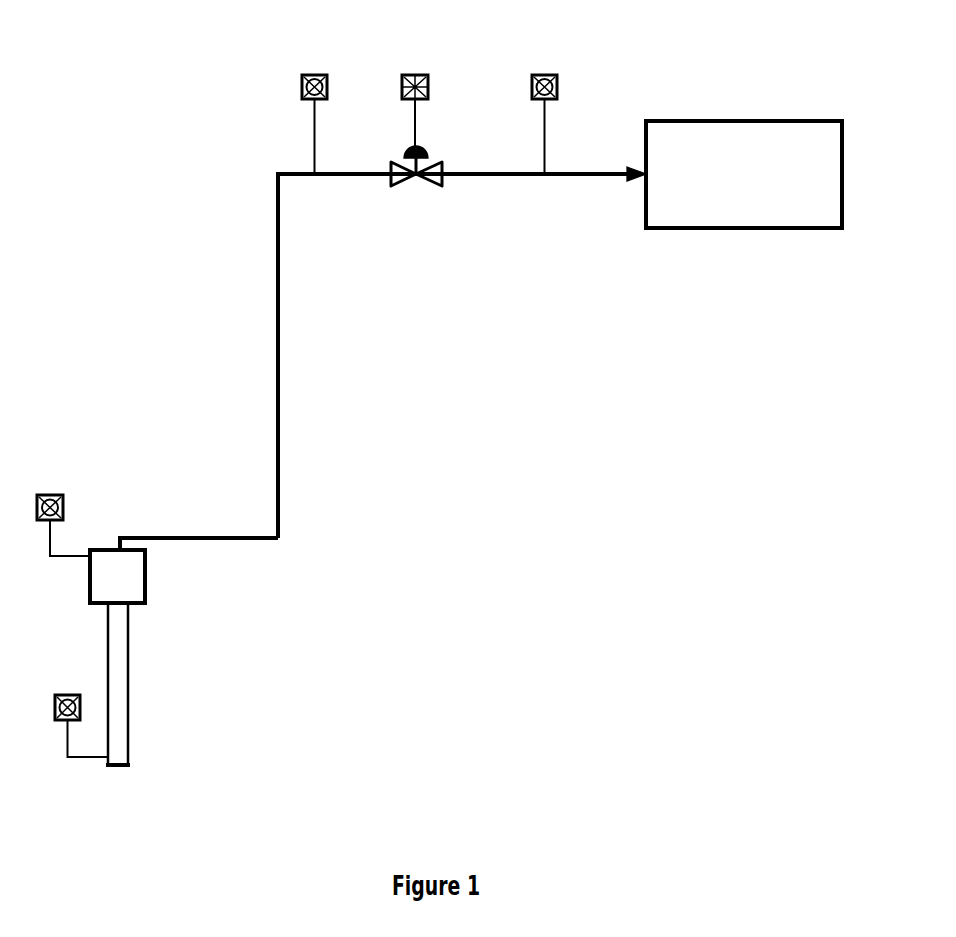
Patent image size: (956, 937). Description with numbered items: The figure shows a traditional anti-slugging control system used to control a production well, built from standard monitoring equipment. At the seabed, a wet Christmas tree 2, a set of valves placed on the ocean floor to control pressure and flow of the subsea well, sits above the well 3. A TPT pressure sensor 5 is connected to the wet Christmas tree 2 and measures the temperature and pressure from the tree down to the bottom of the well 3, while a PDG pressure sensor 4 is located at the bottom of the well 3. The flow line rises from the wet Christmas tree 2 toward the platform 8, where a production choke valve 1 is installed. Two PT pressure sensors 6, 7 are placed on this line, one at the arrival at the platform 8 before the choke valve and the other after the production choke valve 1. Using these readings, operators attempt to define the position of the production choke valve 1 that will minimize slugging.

The production choke valve 1 is at (420, 190).
The wet Christmas tree 2 is at (153, 592).
The well 3 is at (128, 767).
The PDG pressure sensor 4 is at (53, 693).
The TPT pressure sensor 5 is at (67, 490).
The PT pressure sensor 6 is at (328, 72).
The PT pressure sensor 7 is at (558, 72).
The platform 8 is at (732, 115).